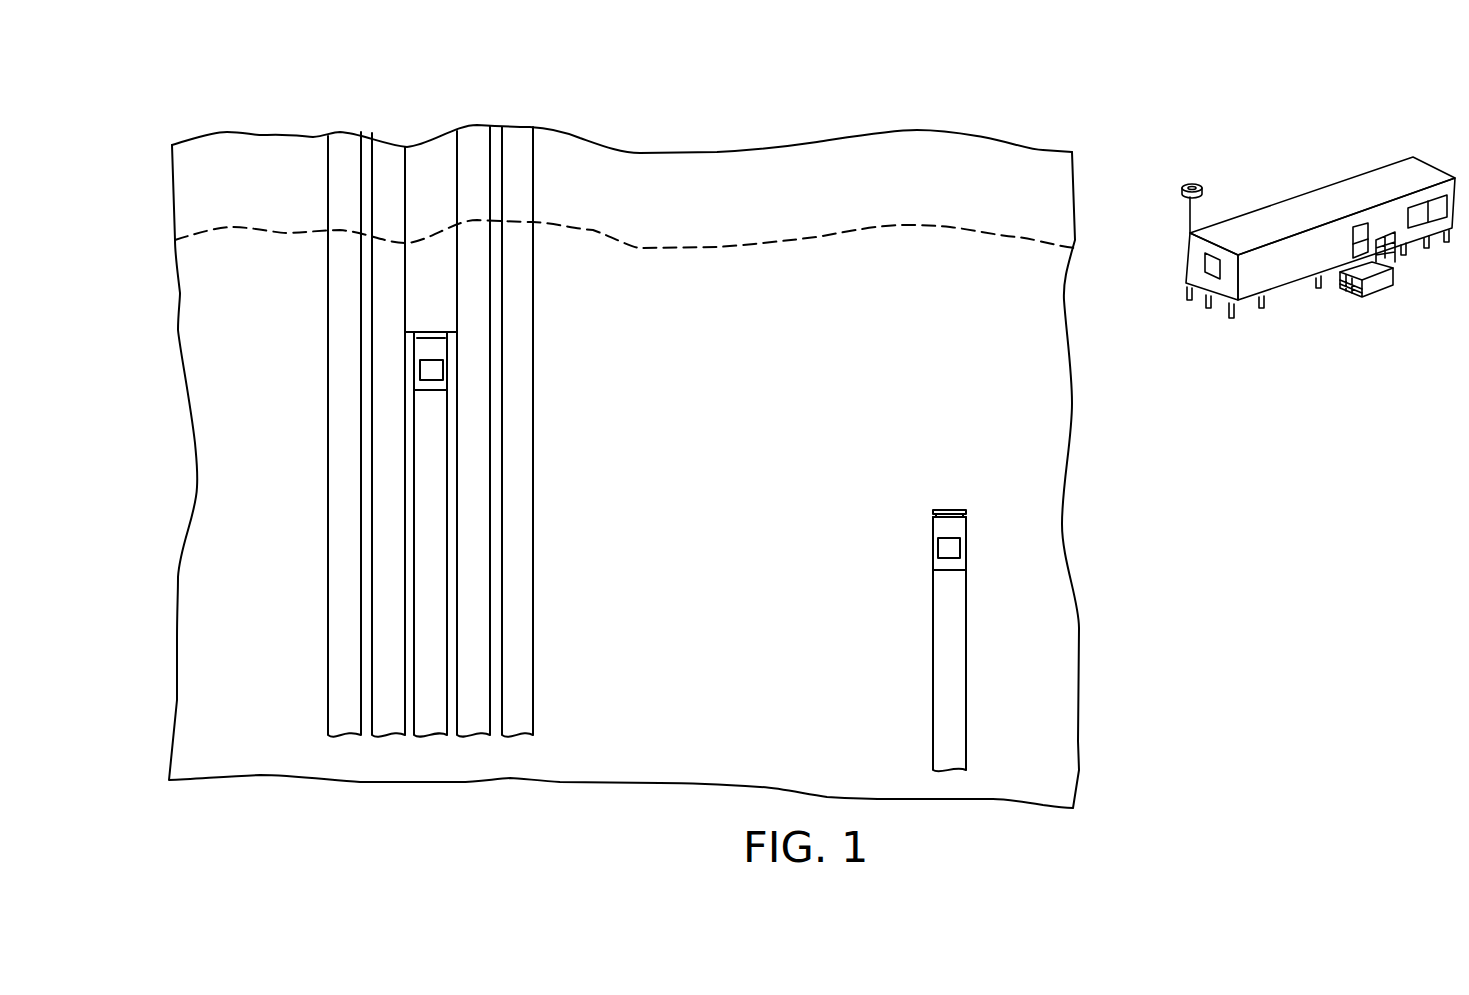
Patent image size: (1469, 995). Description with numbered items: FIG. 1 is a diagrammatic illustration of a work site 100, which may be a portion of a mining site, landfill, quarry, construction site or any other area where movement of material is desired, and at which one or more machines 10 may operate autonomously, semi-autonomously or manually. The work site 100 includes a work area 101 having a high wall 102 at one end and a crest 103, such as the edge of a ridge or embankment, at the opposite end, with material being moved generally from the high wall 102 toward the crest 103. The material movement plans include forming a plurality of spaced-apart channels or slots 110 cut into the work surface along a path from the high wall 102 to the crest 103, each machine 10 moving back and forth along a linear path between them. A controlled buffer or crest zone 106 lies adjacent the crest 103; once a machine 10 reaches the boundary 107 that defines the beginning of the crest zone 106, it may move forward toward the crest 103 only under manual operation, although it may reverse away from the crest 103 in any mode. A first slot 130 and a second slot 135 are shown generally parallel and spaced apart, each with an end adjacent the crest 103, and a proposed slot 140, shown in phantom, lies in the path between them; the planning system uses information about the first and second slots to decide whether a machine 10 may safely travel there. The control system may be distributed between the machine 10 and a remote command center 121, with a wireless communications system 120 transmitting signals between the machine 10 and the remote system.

The work site 100 is at (214, 101).
The work area 101 is at (233, 297).
The high wall 102 is at (990, 800).
The crest 103 is at (310, 135).
The crest zone 106 is at (252, 167).
The boundary 107 is at (903, 223).
The slots 110 is at (433, 532).
The first slot 130 is at (390, 298).
The second slot 135 is at (480, 293).
The proposed slot 140 is at (428, 273).
The machine 10 is at (427, 385).
The wireless communications system 120 is at (1203, 190).
The command center 121 is at (1330, 212).